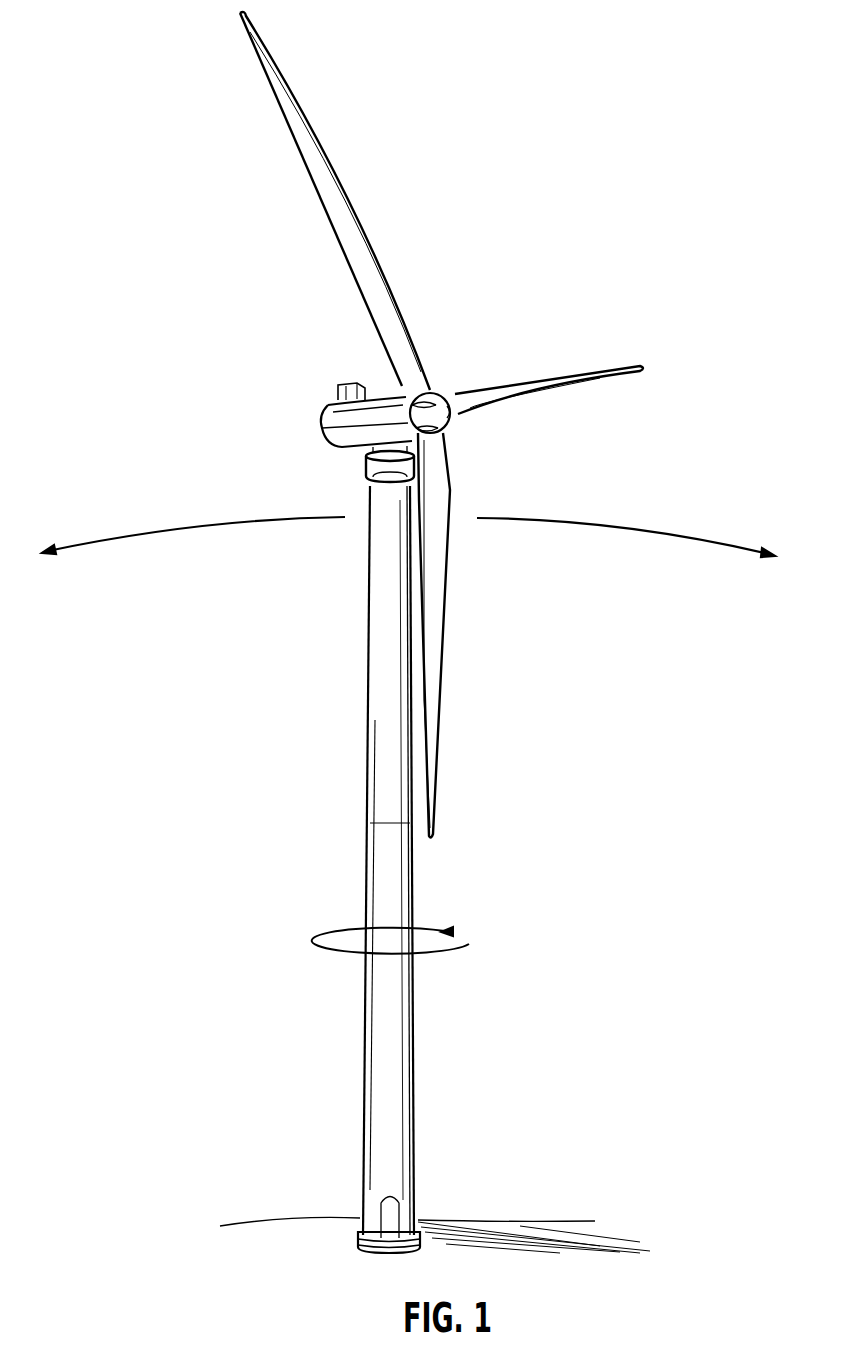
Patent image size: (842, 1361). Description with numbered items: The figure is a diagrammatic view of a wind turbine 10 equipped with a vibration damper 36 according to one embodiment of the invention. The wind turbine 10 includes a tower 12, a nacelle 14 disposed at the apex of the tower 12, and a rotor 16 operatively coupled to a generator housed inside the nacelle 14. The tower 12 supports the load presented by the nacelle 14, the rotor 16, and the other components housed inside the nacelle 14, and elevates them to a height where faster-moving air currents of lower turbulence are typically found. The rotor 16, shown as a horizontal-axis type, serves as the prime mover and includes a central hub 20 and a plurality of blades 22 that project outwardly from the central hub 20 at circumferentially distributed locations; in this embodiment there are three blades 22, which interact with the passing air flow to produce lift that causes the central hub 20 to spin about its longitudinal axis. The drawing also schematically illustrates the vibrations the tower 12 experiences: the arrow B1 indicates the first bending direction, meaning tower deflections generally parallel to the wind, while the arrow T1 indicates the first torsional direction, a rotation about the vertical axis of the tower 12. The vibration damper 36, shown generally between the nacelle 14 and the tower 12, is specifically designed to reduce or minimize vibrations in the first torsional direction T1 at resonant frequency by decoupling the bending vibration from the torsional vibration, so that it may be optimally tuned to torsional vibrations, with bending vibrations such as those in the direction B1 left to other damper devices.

The wind turbine 10 is at (435, 632).
The tower 12 is at (370, 694).
The nacelle 14 is at (328, 408).
The rotor 16 is at (452, 425).
The central hub 20 is at (440, 425).
The blades 22 is at (277, 107).
The vibration damper 36 is at (364, 464).
The first bending direction B1 is at (655, 534).
The first torsional direction T1 is at (447, 950).